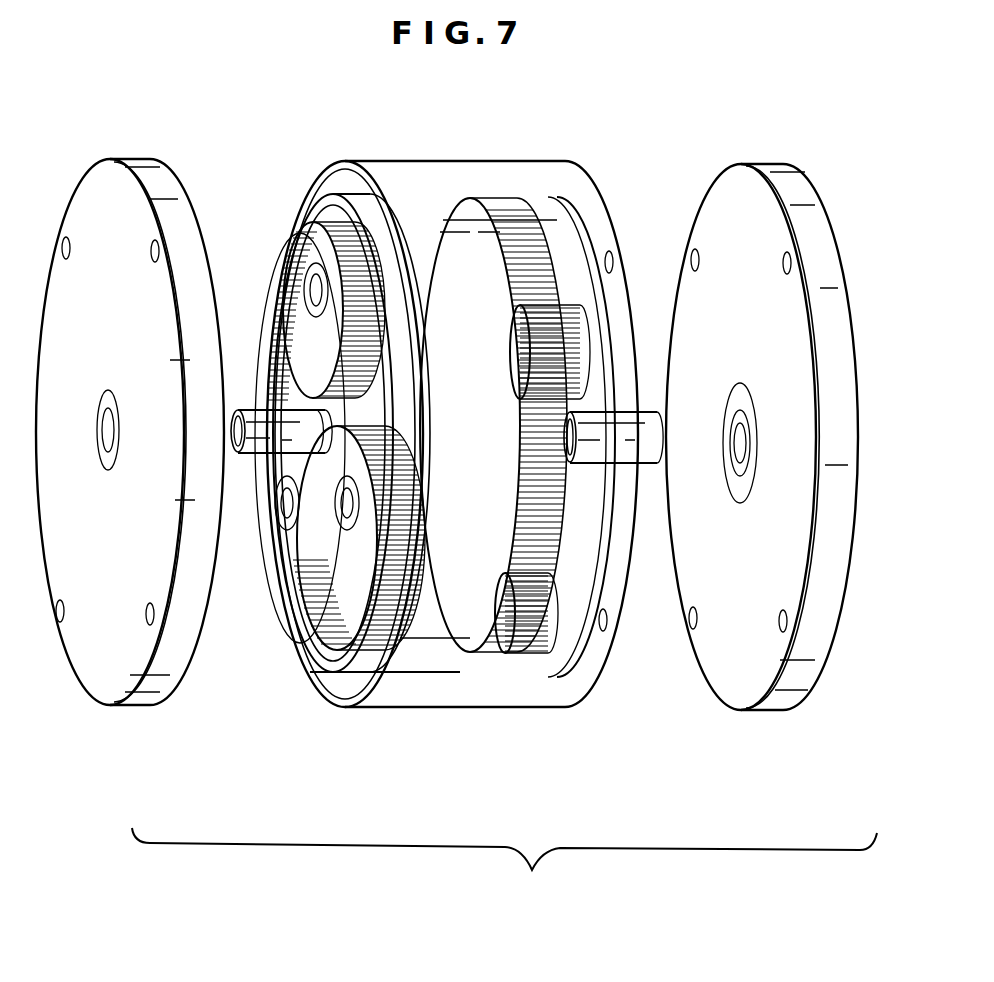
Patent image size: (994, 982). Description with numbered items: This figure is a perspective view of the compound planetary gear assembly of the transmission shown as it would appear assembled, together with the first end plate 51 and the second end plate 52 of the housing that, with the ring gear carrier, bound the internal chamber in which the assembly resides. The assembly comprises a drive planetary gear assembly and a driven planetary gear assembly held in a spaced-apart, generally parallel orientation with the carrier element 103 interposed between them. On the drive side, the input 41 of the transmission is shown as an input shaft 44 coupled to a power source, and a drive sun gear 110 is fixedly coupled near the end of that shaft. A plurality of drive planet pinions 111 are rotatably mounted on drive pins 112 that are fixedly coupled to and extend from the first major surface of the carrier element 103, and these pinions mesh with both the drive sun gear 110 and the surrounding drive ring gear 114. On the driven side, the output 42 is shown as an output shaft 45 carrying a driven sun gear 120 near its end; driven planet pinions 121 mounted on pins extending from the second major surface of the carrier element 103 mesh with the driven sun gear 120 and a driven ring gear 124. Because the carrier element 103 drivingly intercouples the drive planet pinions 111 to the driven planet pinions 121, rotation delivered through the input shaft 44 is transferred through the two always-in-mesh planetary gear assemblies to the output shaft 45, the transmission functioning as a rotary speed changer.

The first end plate 51 is at (130, 704).
The second end plate 52 is at (742, 712).
The carrier element 103 is at (427, 658).
The drive ring gear 114 is at (310, 657).
The drive sun gear 110 is at (330, 393).
The drive pins 112 is at (263, 547).
The drive planet pinions 111 is at (345, 232).
The driven ring gear 124 is at (452, 220).
The driven sun gear 120 is at (545, 523).
The driven planet pinions 121 is at (562, 312).
The input shaft 44 is at (252, 410).
The input 41 is at (252, 455).
The output shaft 45 is at (605, 412).
The output 42 is at (602, 486).